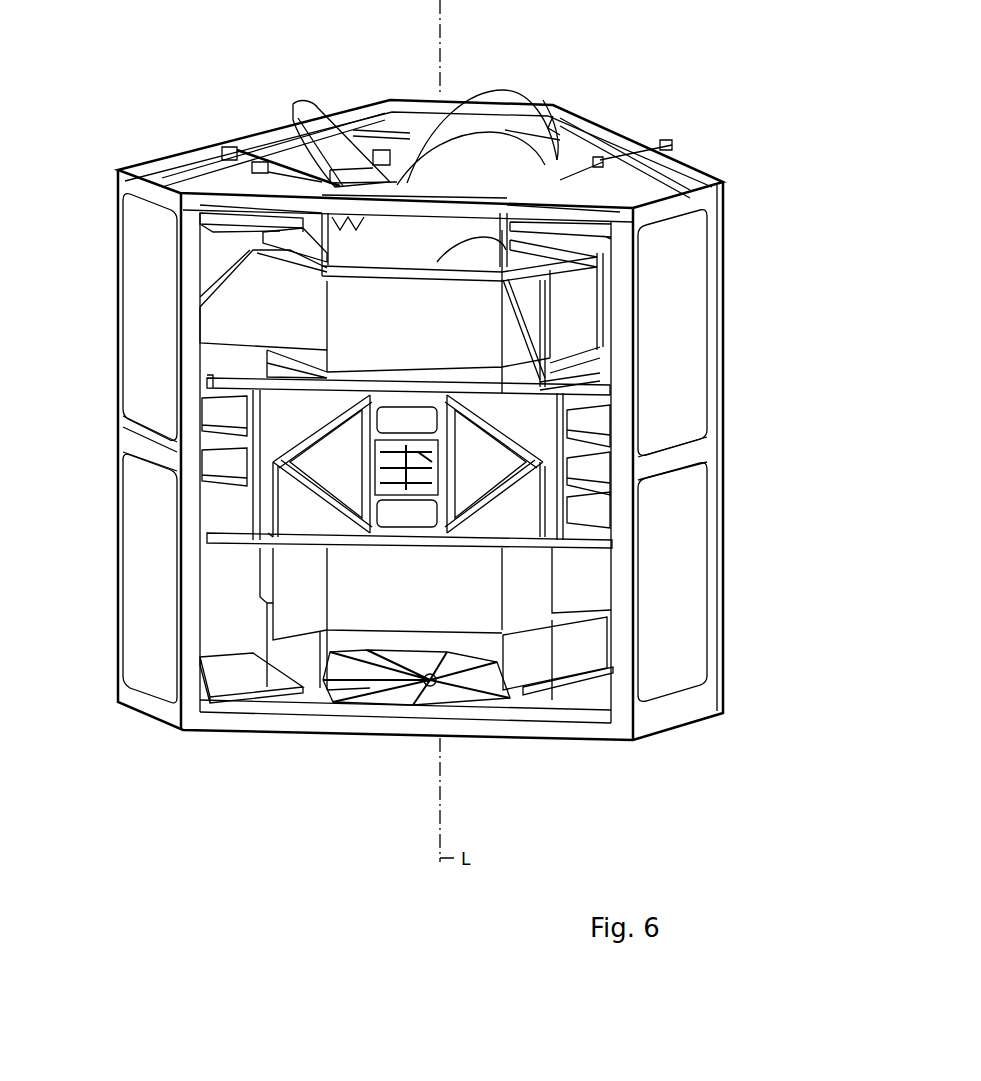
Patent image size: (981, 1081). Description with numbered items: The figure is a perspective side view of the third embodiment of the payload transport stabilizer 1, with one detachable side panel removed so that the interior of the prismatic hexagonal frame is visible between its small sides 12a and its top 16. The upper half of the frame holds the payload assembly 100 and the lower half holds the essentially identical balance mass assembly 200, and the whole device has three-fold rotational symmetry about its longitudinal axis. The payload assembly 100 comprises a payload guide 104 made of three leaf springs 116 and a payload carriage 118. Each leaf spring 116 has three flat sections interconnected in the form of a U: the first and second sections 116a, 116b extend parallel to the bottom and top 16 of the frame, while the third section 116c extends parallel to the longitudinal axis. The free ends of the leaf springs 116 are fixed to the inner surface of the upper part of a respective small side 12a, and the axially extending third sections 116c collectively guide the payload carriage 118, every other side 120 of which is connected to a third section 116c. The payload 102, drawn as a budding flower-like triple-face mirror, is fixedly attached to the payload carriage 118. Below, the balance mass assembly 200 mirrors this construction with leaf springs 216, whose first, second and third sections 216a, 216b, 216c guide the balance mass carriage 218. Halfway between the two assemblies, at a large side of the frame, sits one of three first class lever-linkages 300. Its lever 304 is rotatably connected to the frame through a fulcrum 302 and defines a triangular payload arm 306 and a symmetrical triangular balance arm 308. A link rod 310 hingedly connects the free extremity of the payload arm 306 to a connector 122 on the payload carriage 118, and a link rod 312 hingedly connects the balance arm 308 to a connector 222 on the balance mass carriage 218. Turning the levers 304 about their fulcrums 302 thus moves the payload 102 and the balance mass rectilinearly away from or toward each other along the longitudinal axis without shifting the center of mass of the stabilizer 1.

The payload transport stabilizer 1 is at (190, 100).
The payload assembly 100 is at (630, 130).
The balance mass assembly 200 is at (585, 755).
The top 16 is at (700, 162).
The small side 12a is at (157, 327).
The payload 102 is at (505, 110).
The payload guide 104 is at (222, 266).
The payload carriage 118 is at (420, 315).
The side 120 is at (308, 262).
The connector 122 is at (247, 293).
The leaf spring 116 is at (277, 238).
The first section 116a is at (228, 412).
The second section 116b is at (218, 218).
The third section 116c is at (273, 365).
The link rod 310 is at (544, 418).
The first class lever-linkage 300 is at (526, 465).
The fulcrum 302 is at (398, 460).
The lever 304 is at (440, 438).
The payload arm 306 is at (498, 495).
The balance arm 308 is at (270, 492).
The link rod 312 is at (268, 518).
The balance mass carriage 218 is at (472, 597).
The connector 222 is at (297, 573).
The leaf spring 216 is at (558, 642).
The first section 216a is at (227, 681).
The second section 216b is at (228, 467).
The third section 216c is at (270, 647).